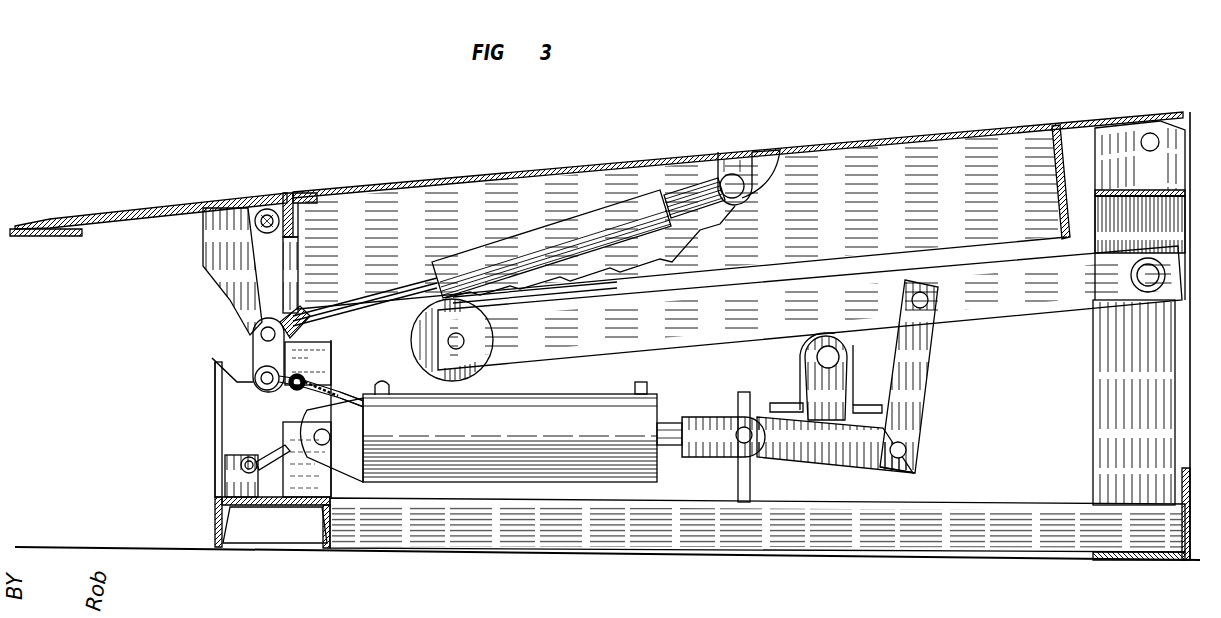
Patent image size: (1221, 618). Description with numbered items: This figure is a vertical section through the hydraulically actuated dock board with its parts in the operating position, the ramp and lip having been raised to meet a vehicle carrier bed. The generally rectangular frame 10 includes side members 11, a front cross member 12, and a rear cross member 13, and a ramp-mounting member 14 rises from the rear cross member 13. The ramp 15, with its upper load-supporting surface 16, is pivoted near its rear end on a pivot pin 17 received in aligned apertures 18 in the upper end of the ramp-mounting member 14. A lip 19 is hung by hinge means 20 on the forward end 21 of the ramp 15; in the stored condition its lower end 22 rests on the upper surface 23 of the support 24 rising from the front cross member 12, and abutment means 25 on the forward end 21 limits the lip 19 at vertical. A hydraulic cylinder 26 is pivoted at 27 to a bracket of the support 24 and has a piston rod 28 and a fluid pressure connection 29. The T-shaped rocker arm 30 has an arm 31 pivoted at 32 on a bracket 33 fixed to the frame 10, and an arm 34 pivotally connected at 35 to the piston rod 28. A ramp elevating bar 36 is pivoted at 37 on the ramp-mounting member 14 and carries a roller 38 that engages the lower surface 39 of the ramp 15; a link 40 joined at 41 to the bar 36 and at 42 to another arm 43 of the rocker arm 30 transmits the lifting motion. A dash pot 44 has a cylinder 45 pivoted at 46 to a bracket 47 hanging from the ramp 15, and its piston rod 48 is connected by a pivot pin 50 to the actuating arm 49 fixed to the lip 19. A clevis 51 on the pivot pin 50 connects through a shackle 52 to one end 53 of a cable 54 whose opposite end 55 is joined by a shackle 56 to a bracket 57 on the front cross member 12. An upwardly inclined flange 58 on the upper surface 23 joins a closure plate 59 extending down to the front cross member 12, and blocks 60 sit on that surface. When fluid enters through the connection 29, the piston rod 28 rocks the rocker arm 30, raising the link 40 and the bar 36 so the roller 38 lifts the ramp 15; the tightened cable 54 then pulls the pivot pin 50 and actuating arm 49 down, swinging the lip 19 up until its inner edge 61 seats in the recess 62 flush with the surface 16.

The frame 10 is at (791, 558).
The side members 11 is at (545, 552).
The front cross member 12 is at (322, 527).
The rear cross member 13 is at (1148, 561).
The ramp-mounting member 14 is at (1188, 368).
The ramp 15 is at (852, 152).
The upper load-supporting surface 16 is at (883, 140).
The pivot pin 17 is at (1142, 135).
The apertures 18 is at (1150, 133).
The lip 19 is at (147, 208).
The hinge means 20 is at (267, 234).
The forward end of the ramp 21 is at (299, 226).
The lower end of the lip 22 is at (17, 225).
The upper surface of the support 23 is at (244, 381).
The support 24 is at (339, 394).
The abutment means 25 is at (288, 302).
The hydraulic cylinder 26 is at (584, 396).
The pivotal mounting of the hydraulic cylinder 27 is at (330, 437).
The piston rod 28 is at (670, 422).
The fluid pressure connection 29 is at (383, 384).
The rocker arm 30 is at (843, 462).
The arm of the rocker arm 31 is at (846, 385).
The pivot of the rocker arm 32 is at (850, 355).
The bracket 33 is at (790, 403).
The arm of the rocker arm 34 is at (783, 455).
The pivotal connection to the piston rod 35 is at (748, 446).
The ramp elevating bar 36 is at (752, 338).
The pivotal mounting of the elevating bar 37 is at (1131, 277).
The roller 38 is at (411, 343).
The lower surface of the ramp 39 is at (585, 279).
The link 40 is at (928, 372).
The pivotal connection of link to elevating bar 41 is at (912, 300).
The pivotal connection of link to rocker arm 42 is at (908, 450).
The arm of the rocker arm 43 is at (874, 468).
The dash pot 44 is at (479, 247).
The cylinder of the dash pot 45 is at (570, 228).
The pivotal connection of the dash pot cylinder 46 is at (742, 197).
The bracket 47 is at (758, 160).
The piston rod of the dash pot 48 is at (362, 303).
The actuating arm 49 is at (212, 256).
The pivot pin 50 is at (260, 332).
The clevis 51 is at (287, 353).
The shackle 52 is at (271, 390).
The end of the cable 53 is at (300, 388).
The cable 54 is at (356, 400).
The opposite end of the cable 55 is at (272, 448).
The shackle 56 is at (250, 457).
The bracket 57 is at (225, 482).
The upwardly inclined flange 58 is at (218, 354).
The closure plate 59 is at (215, 420).
The blocks 60 is at (332, 356).
The inner edge of the lip 61 is at (299, 192).
The recess 62 is at (288, 192).